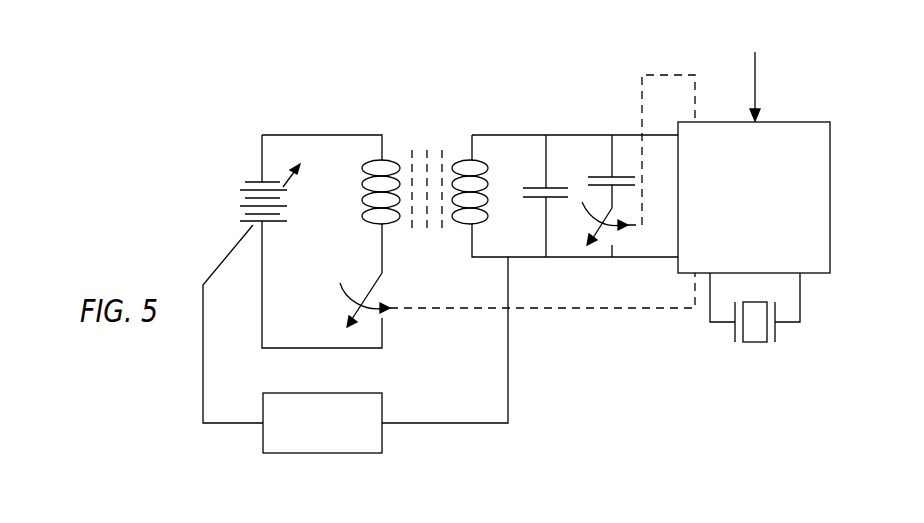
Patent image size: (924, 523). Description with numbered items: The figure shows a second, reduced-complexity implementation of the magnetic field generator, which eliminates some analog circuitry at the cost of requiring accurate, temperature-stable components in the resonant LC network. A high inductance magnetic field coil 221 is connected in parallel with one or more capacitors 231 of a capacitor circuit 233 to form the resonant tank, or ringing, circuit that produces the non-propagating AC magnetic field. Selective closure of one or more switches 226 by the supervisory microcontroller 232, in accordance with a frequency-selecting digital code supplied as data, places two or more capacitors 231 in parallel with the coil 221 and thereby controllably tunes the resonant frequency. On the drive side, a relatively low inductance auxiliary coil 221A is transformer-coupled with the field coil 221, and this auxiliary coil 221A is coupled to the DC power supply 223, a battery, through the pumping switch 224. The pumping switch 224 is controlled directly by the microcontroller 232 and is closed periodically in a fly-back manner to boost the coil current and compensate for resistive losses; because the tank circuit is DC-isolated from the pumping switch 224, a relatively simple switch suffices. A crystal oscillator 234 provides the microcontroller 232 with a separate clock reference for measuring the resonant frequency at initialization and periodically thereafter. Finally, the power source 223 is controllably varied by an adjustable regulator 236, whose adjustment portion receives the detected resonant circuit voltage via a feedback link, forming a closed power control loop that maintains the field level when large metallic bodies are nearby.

The magnetic field coil 221 is at (478, 170).
The auxiliary coil 221A is at (362, 210).
The DC power supply 223 is at (240, 197).
The pumping switch 224 is at (347, 303).
The switches 226 is at (608, 228).
The capacitors 231 is at (545, 200).
The supervisory microcontroller 232 is at (830, 205).
The capacitor circuit 233 is at (568, 158).
The crystal oscillator 234 is at (757, 343).
The adjustable regulator 236 is at (323, 453).